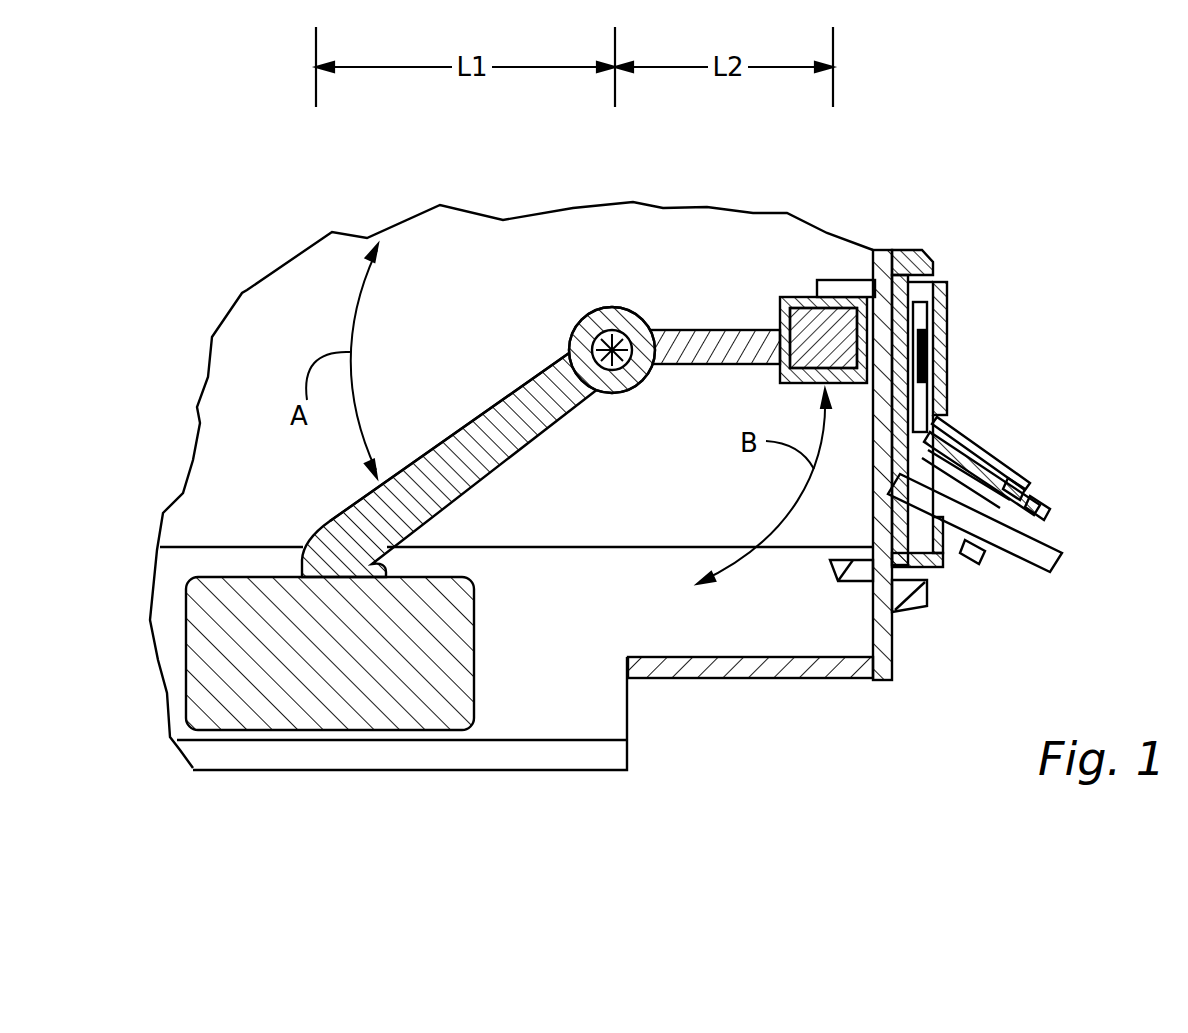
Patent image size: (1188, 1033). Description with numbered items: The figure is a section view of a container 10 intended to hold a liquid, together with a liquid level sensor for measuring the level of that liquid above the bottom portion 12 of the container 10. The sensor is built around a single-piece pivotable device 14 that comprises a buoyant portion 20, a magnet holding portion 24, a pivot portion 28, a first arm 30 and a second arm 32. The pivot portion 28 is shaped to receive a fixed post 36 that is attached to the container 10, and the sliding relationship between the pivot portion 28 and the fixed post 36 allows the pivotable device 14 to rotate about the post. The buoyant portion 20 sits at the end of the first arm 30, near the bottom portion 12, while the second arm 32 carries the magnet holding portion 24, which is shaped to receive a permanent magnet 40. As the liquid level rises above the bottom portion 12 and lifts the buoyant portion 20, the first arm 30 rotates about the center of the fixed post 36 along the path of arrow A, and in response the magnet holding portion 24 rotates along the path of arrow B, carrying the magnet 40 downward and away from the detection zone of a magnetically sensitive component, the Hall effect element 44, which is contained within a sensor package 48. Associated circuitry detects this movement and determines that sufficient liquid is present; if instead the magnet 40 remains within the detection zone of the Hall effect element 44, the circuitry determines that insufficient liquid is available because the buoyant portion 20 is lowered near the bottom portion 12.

The container 10 is at (282, 280).
The bottom portion 12 is at (500, 735).
The pivotable device 14 is at (527, 385).
The buoyant portion 20 is at (333, 722).
The magnet holding portion 24 is at (835, 297).
The pivot portion 28 is at (645, 330).
The first arm 30 is at (474, 420).
The second arm 32 is at (710, 340).
The fixed post 36 is at (608, 330).
The permanent magnet 40 is at (852, 300).
The Hall effect element 44 is at (947, 310).
The sensor package 48 is at (950, 365).